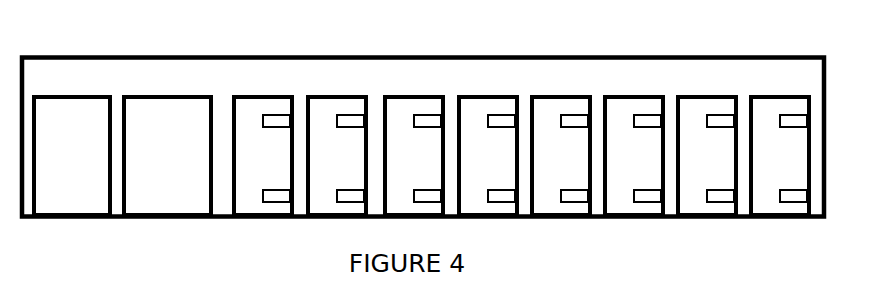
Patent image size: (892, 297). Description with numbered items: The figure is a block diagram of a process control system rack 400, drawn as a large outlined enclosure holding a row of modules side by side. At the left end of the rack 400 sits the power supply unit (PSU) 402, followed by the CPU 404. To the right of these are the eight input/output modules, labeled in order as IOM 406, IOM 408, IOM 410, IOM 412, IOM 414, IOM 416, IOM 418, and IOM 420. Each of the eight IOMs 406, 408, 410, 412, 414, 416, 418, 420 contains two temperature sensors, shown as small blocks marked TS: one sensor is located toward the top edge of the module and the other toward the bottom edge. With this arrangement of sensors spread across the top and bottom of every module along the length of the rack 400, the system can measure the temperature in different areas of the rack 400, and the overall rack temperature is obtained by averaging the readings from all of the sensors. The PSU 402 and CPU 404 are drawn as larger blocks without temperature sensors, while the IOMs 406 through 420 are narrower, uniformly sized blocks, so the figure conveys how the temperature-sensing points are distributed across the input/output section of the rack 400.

The rack 400 is at (149, 57).
The power supply unit (PSU) 402 is at (53, 191).
The CPU 404 is at (148, 191).
The IOM 406 is at (248, 182).
The IOM 408 is at (322, 182).
The IOM 410 is at (399, 182).
The IOM 412 is at (473, 182).
The IOM 414 is at (546, 182).
The IOM 416 is at (619, 182).
The IOM 418 is at (692, 182).
The IOM 420 is at (765, 182).